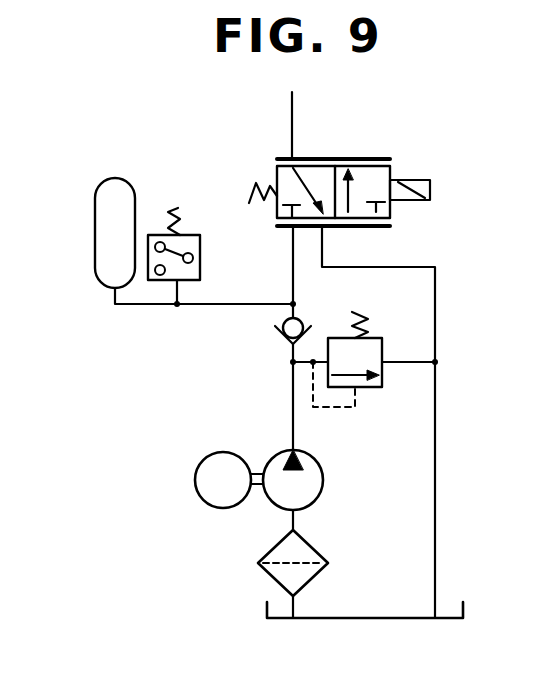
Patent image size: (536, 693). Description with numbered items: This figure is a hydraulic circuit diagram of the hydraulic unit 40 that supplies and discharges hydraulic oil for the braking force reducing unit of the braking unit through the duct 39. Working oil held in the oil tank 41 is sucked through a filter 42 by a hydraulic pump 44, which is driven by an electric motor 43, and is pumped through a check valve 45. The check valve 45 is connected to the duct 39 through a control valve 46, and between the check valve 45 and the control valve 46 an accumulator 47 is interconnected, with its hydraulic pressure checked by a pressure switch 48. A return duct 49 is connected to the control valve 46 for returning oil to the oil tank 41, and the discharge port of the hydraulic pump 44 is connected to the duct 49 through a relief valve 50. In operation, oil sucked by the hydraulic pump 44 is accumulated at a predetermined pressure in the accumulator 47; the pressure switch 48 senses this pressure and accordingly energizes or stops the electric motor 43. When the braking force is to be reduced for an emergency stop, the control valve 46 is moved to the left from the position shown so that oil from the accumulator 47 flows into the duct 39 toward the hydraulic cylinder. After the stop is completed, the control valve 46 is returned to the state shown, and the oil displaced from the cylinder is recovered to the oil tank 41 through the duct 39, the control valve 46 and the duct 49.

The duct 39 is at (297, 103).
The hydraulic unit 40 is at (513, 447).
The oil tank 41 is at (382, 618).
The filter 42 is at (258, 566).
The electric motor 43 is at (196, 471).
The hydraulic pump 44 is at (318, 493).
The check valve 45 is at (276, 336).
The control valve 46 is at (379, 156).
The accumulator 47 is at (95, 222).
The pressure switch 48 is at (200, 258).
The duct 49 is at (435, 303).
The relief valve 50 is at (364, 388).